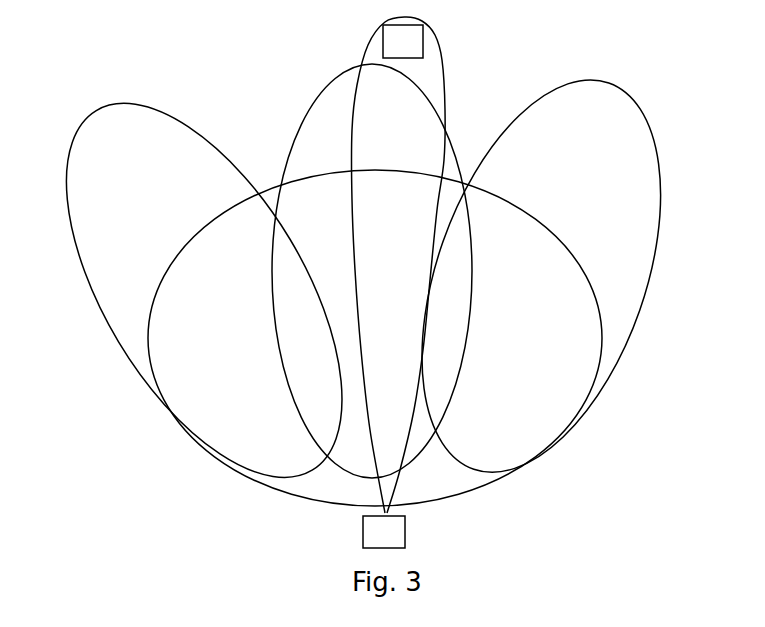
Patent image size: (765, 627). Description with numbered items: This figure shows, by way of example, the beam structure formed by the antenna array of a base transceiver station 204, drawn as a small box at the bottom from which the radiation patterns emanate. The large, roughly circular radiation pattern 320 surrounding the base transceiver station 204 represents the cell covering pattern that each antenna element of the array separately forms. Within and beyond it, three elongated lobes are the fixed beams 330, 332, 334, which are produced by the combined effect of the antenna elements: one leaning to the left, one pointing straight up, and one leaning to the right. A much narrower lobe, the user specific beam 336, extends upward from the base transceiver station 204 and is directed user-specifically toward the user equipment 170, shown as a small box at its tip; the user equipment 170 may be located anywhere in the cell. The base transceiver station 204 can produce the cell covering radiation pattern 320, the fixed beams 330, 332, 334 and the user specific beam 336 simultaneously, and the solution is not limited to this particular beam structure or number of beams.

The user equipment 170 is at (412, 24).
The base transceiver station 204 is at (405, 532).
The radiation pattern 320 is at (215, 216).
The fixed beam 330 is at (123, 106).
The fixed beam 332 is at (313, 100).
The fixed beam 334 is at (607, 82).
The user specific beam 336 is at (363, 58).